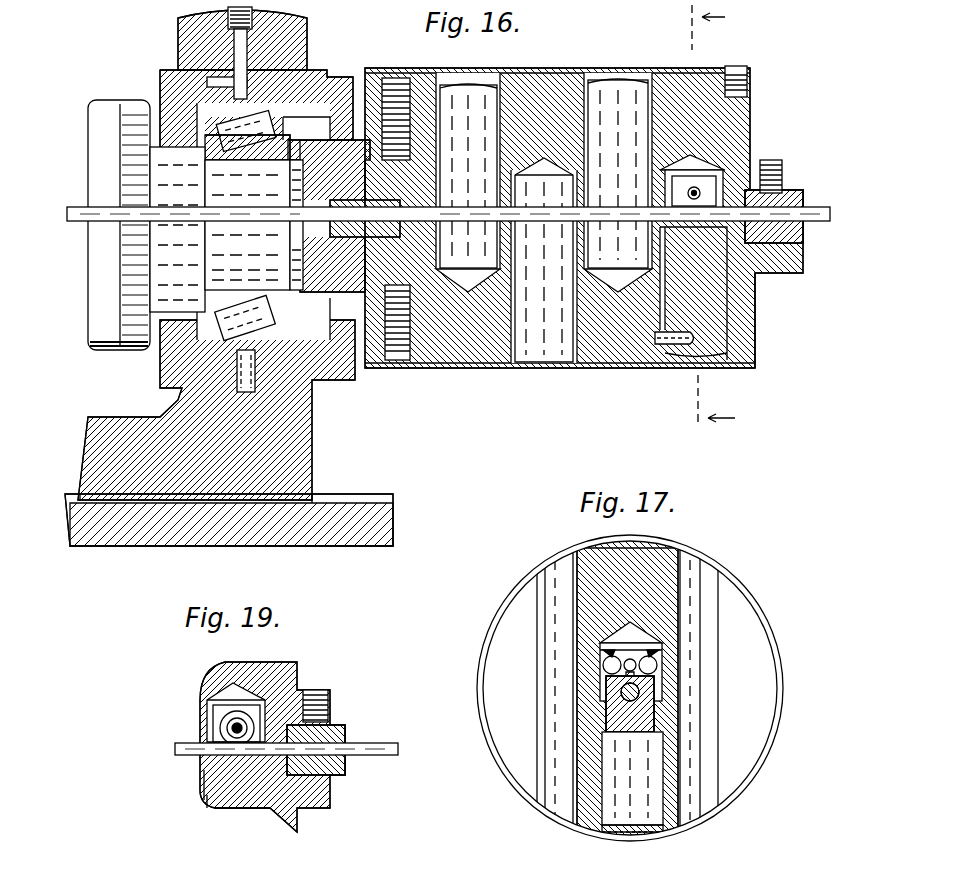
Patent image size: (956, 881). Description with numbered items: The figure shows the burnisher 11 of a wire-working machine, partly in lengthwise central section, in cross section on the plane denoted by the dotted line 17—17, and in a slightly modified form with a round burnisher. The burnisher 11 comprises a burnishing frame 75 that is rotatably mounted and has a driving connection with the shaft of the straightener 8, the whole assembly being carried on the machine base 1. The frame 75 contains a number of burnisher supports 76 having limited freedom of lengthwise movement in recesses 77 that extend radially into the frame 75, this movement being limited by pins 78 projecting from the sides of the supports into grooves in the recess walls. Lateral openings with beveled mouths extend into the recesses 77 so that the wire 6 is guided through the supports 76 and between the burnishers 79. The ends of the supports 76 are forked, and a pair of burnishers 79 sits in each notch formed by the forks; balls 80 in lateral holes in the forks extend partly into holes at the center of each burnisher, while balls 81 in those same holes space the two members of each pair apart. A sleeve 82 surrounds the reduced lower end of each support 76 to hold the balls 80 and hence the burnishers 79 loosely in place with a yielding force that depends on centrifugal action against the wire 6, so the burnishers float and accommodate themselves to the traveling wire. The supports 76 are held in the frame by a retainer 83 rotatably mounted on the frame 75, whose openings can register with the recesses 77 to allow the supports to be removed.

In FIG. 16, the base 1 is at (352, 512).
In FIG. 16, the wire 6 is at (80, 226).
In FIG. 17, the wire 6 is at (621, 693).
In FIG. 19, the wire 6 is at (372, 745).
In FIG. 16, the straightener 8 is at (108, 114).
In FIG. 16, the burnisher 11 is at (544, 154).
In FIG. 17, the burnisher 11 is at (621, 690).
In FIG. 16, the section plane line 17— 17 is at (730, 219).
In FIG. 16, the burnishing frame 75 is at (684, 84).
In FIG. 17, the burnishing frame 75 is at (664, 556).
In FIG. 19, the burnishing frame 75 is at (298, 674).
In FIG. 16, the burnisher supports 76 is at (718, 311).
In FIG. 17, the burnisher supports 76 is at (628, 816).
In FIG. 19, the burnisher supports 76 is at (218, 786).
In FIG. 16, the recesses 77 is at (728, 292).
In FIG. 17, the recesses 77 is at (656, 828).
In FIG. 19, the recesses 77 is at (232, 808).
In FIG. 16, the pins 78 is at (680, 348).
In FIG. 16, the burnishers 79 is at (723, 173).
In FIG. 17, the burnishers 79 is at (606, 683).
In FIG. 19, the burnishers 79 is at (217, 722).
In FIG. 17, the balls 80 is at (660, 667).
In FIG. 17, the balls 81 is at (655, 683).
In FIG. 19, the balls 81 is at (226, 730).
In FIG. 16, the sleeve 82 is at (616, 224).
In FIG. 17, the sleeve 82 is at (600, 664).
In FIG. 19, the sleeve 82 is at (270, 716).
In FIG. 16, the retainer 83 is at (383, 78).
In FIG. 17, the retainer 83 is at (676, 834).